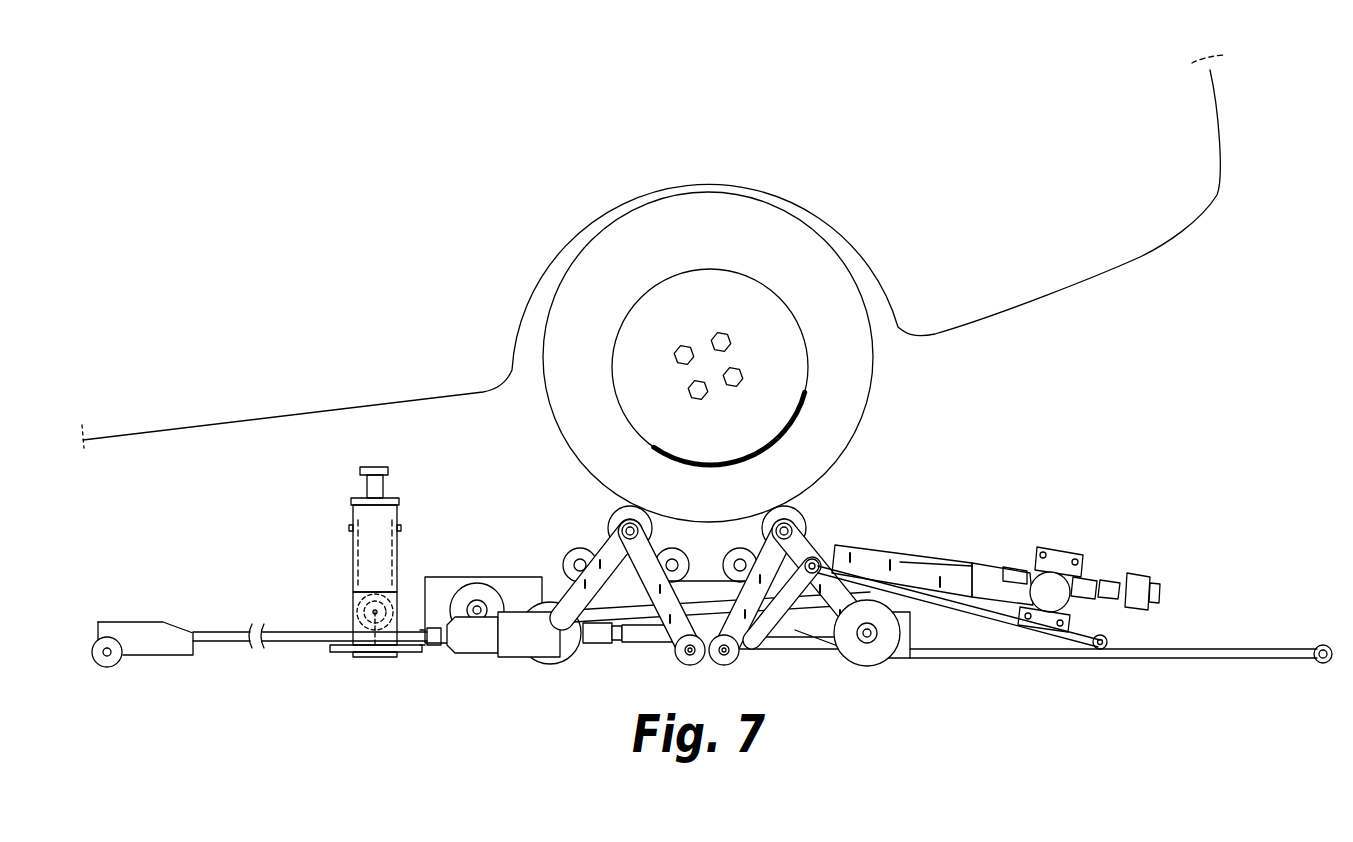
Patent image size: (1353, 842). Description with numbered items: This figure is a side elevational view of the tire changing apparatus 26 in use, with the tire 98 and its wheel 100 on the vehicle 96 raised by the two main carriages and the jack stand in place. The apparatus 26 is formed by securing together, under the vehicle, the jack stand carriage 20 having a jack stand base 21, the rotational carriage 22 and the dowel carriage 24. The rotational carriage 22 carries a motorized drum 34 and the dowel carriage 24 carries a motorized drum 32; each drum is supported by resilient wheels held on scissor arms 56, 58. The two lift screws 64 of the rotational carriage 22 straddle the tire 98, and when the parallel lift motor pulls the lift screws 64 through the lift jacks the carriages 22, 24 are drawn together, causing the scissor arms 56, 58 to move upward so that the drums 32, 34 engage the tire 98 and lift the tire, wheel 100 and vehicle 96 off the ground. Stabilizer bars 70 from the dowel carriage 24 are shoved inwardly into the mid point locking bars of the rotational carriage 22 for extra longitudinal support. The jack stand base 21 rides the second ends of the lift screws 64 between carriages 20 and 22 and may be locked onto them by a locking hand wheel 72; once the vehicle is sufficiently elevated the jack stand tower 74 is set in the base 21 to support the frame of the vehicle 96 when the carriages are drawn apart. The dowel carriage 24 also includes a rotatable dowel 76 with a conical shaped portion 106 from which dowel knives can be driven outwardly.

The jack stand carriage 20 is at (143, 676).
The jack stand base 21 is at (353, 622).
The rotational carriage 22 is at (556, 683).
The dowel carriage 24 is at (905, 676).
The tire changing apparatus 26 is at (938, 479).
The motorized drum 32 is at (800, 522).
The motorized drum 34 is at (607, 526).
The scissor arm 56 is at (749, 588).
The scissor arm 58 is at (641, 558).
The lift screw 64 is at (222, 630).
The stabilizer bar 70 is at (1252, 648).
The locking hand wheel 72 is at (388, 660).
The jack stand tower 74 is at (397, 555).
The rotatable dowel 76 is at (965, 558).
The vehicle 96 is at (1140, 257).
The tire 98 is at (874, 395).
The wheel 100 is at (614, 405).
The conical shaped portion 106 is at (905, 560).